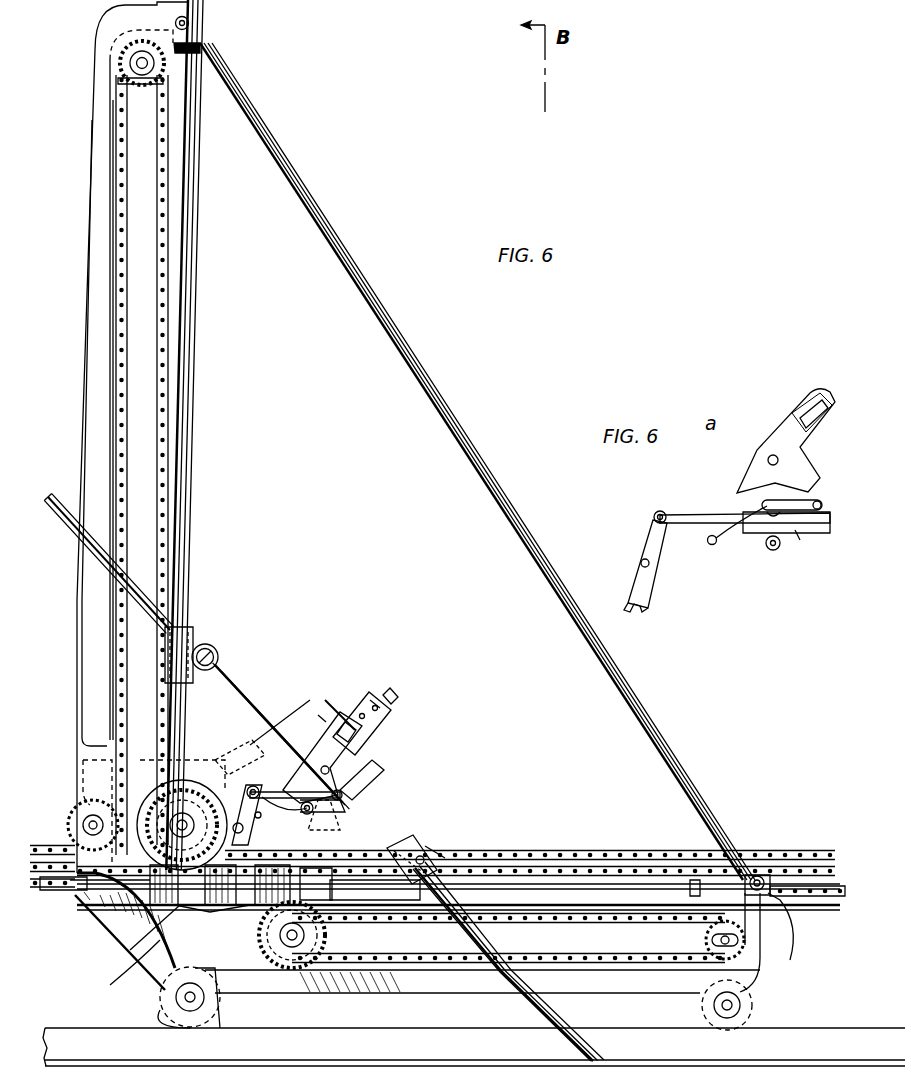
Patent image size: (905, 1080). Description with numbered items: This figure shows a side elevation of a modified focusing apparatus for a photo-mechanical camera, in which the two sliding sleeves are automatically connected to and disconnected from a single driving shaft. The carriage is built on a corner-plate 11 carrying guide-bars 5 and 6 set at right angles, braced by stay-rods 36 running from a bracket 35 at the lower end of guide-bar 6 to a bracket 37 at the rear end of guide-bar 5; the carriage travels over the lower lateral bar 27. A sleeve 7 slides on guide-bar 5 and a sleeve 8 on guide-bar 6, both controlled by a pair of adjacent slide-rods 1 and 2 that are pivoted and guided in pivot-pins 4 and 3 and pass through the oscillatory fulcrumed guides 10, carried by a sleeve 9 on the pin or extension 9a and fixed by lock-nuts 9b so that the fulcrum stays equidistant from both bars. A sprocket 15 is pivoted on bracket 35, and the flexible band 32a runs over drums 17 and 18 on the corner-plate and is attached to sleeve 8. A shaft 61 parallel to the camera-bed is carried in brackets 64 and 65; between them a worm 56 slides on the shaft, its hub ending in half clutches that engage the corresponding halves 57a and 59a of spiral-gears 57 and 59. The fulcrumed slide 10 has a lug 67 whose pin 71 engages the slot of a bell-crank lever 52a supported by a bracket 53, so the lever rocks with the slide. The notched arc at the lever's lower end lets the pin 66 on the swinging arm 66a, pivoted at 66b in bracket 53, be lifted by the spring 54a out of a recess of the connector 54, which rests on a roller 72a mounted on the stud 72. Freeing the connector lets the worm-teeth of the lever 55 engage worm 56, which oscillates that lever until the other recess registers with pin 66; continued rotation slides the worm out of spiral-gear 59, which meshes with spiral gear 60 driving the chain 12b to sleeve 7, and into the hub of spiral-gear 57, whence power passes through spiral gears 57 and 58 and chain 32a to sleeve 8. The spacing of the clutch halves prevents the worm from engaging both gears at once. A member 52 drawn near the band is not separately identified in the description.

In FIG. 6, the slide-rod 1 is at (238, 690).
In FIG. 6, the slide-rod 2 is at (72, 497).
In FIG. 6, the pivot-pin 3 is at (218, 658).
In FIG. 6, the pivot-pin 4 is at (445, 855).
In FIG. 6, the guide-bar 5 is at (520, 922).
In FIG. 6, the guide-bar 6 is at (197, 583).
In FIG. 6, the sleeve 7 is at (408, 905).
In FIG. 6, the sleeve 8 is at (165, 655).
In FIG. 6, the sleeve 9 is at (368, 690).
In FIG. 6, the supporting pin (extension of corner-piece) 9a is at (318, 712).
In FIG. 6, the lock-nuts 9b is at (392, 700).
In FIG. 6, the oscillatory fulcrumed guides 10 is at (378, 772).
In FIG. 6, the corner-plate 11 is at (116, 813).
In FIG. 6, the endless chain 12b is at (435, 960).
In FIG. 6, the sprocket 15 is at (140, 85).
In FIG. 6, the drum 17 is at (72, 812).
In FIG. 6, the drum 18 is at (190, 790).
In FIG. 6, the lower lateral bar (supporting track) 27 is at (474, 1047).
In FIG. 6, the flexible band (chain) 32a is at (612, 848).
In FIG. 6, the bracket 35 is at (195, 22).
In FIG. 6, the stay-rods (brace-rods) 36 is at (488, 478).
In FIG. 6, the bracket 37 is at (760, 872).
In FIG. 6, the chain end 52 is at (800, 872).
In FIG. 6, the bell-crank lever 52a is at (345, 808).
In FIG. 6, the bracket 53 is at (290, 742).
In FIG. 6, the connector 54 is at (329, 820).
In FIG. 6a, the connector 54 is at (818, 528).
In FIG. 6, the spring 54a is at (265, 824).
In FIG. 6a, the spring 54a is at (708, 543).
In FIG. 6, the lever 55 is at (256, 790).
In FIG. 6a, the lever 55 is at (650, 530).
In FIG. 6, the worm 56 is at (240, 905).
In FIG. 6, the spiral-gear 57 is at (170, 895).
In FIG. 6, the half clutch 57a is at (110, 990).
In FIG. 6, the spiral gear 58 is at (169, 809).
In FIG. 6, the spiral-gear 59 is at (542, 977).
In FIG. 6, the half clutch 59a is at (170, 990).
In FIG. 6, the spiral gear 60 is at (262, 945).
In FIG. 6, the shaft 61 is at (798, 890).
In FIG. 6, the bracket 64 is at (132, 950).
In FIG. 6, the bracket 65 is at (212, 931).
In FIG. 6, the pin 66 is at (345, 812).
In FIG. 6a, the pin 66 is at (775, 500).
In FIG. 6a, the swinging arm 66a is at (803, 505).
In FIG. 6a, the pivot 66b is at (822, 505).
In FIG. 6, the lug 67 is at (340, 710).
In FIG. 6, the pin 71 is at (362, 752).
In FIG. 6a, the pin 71 is at (808, 420).
In FIG. 6, the stud 72 is at (425, 830).
In FIG. 6a, the stud 72 is at (780, 548).
In FIG. 6, the roller 72a is at (428, 838).
In FIG. 6a, the roller 72a is at (768, 550).